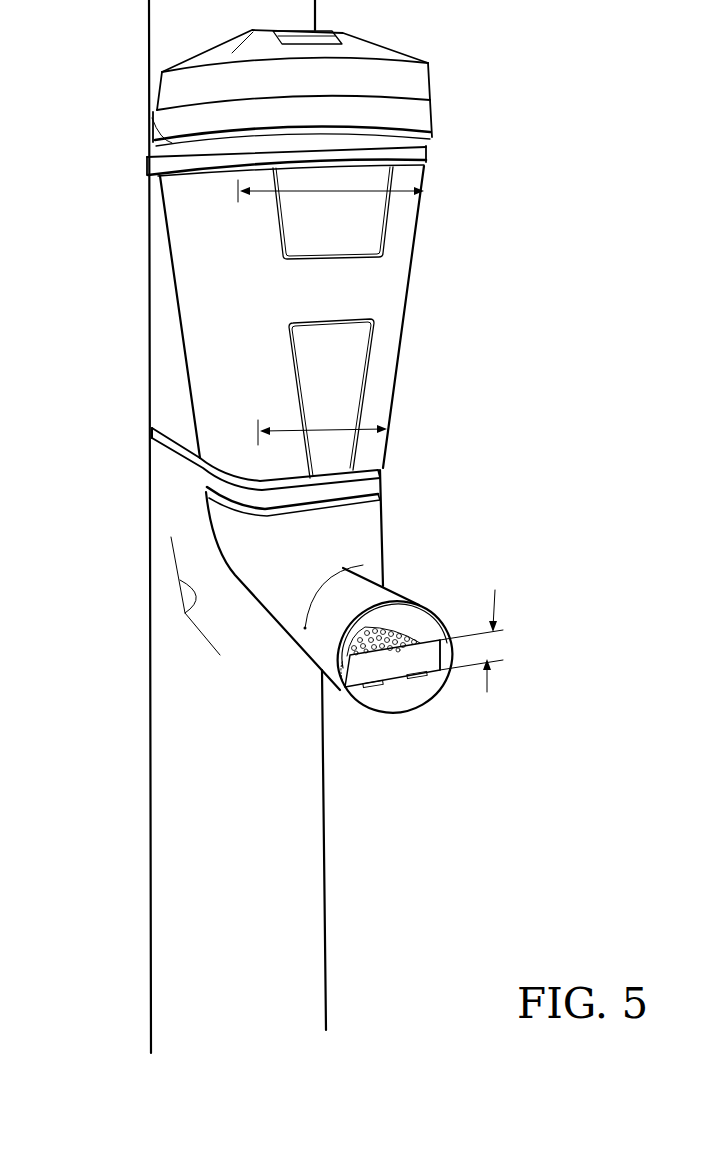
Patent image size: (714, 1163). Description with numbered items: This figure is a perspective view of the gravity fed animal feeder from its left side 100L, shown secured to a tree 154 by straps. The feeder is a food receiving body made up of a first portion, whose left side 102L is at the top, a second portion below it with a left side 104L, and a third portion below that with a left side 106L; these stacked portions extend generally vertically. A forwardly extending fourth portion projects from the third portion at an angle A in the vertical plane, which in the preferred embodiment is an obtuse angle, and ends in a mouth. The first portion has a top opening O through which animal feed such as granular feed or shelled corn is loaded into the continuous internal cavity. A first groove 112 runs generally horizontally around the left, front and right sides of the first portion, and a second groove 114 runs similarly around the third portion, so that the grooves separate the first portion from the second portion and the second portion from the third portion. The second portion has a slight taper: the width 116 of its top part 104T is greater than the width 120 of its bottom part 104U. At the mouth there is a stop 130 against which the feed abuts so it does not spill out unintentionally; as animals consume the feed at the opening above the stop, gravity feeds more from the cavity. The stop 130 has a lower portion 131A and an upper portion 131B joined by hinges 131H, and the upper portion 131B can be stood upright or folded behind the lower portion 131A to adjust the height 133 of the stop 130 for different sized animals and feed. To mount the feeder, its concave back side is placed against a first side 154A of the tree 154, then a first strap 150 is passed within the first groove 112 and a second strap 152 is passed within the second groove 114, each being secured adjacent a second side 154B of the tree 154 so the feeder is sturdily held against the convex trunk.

The left side 100L is at (293, 403).
The left side of the first portion 102L is at (152, 138).
The top part of the second portion 104T is at (160, 202).
The left side of the second portion 104L is at (202, 406).
The bottom part of the second portion 104U is at (398, 407).
The left side of the third portion 106L is at (233, 543).
The first groove 112 is at (249, 71).
The second groove 114 is at (380, 474).
The width of the top part 116 is at (350, 190).
The width of the bottom part 120 is at (343, 427).
The stop 130 is at (438, 708).
The lower portion 131A is at (365, 700).
The upper portion 131B is at (427, 660).
The hinges 131H is at (373, 688).
The height 133 is at (479, 633).
The first strap 150 is at (412, 148).
The second strap 152 is at (384, 487).
The tree 154 is at (175, 526).
The first side of the tree 154A is at (177, 698).
The second side of the tree 154B is at (120, 473).
The top opening O is at (178, 95).
The angle A is at (195, 596).